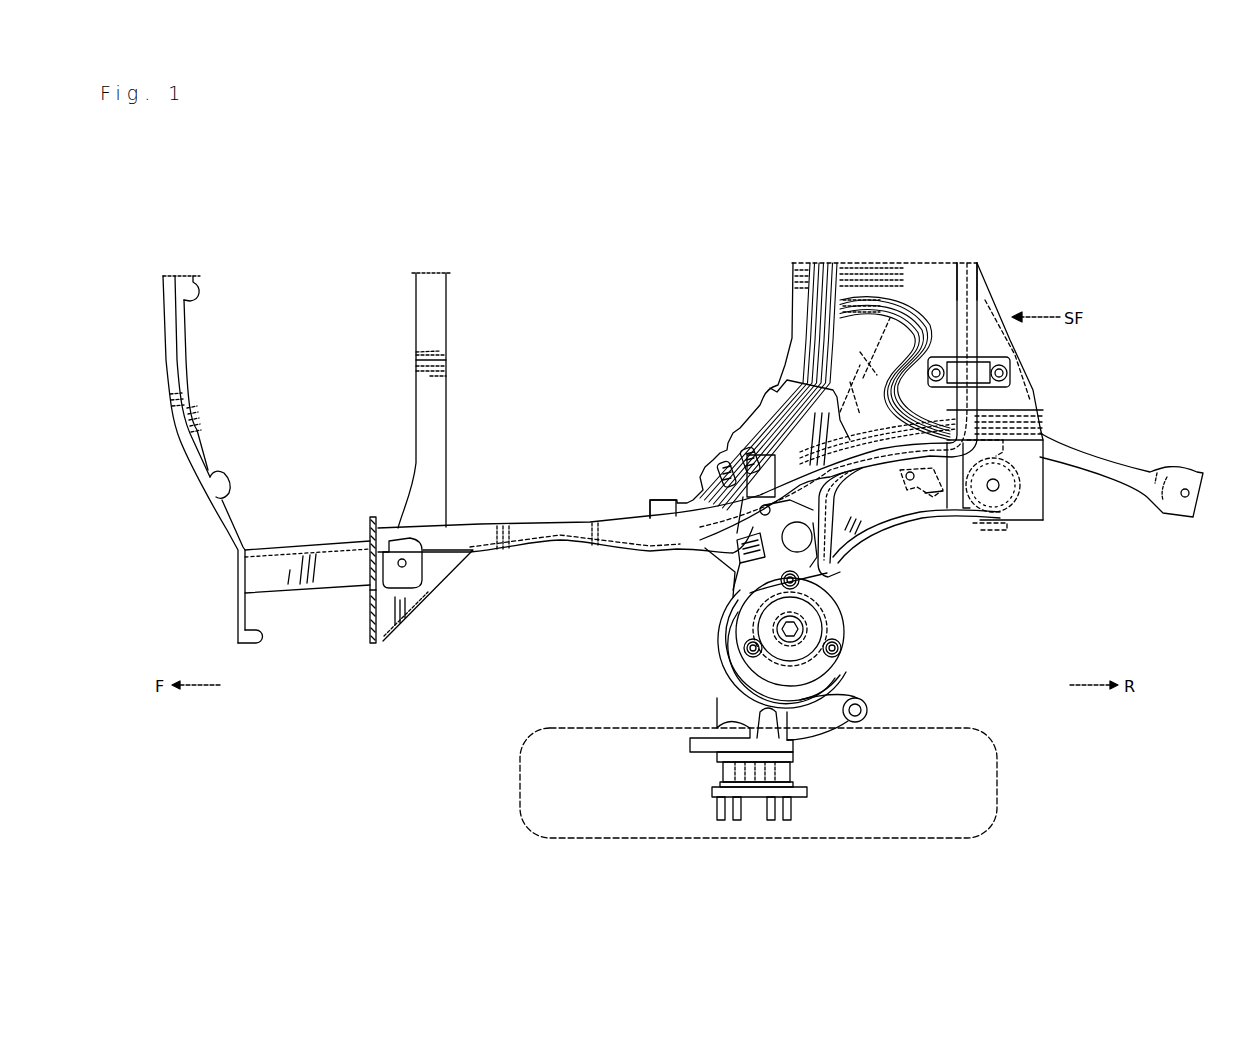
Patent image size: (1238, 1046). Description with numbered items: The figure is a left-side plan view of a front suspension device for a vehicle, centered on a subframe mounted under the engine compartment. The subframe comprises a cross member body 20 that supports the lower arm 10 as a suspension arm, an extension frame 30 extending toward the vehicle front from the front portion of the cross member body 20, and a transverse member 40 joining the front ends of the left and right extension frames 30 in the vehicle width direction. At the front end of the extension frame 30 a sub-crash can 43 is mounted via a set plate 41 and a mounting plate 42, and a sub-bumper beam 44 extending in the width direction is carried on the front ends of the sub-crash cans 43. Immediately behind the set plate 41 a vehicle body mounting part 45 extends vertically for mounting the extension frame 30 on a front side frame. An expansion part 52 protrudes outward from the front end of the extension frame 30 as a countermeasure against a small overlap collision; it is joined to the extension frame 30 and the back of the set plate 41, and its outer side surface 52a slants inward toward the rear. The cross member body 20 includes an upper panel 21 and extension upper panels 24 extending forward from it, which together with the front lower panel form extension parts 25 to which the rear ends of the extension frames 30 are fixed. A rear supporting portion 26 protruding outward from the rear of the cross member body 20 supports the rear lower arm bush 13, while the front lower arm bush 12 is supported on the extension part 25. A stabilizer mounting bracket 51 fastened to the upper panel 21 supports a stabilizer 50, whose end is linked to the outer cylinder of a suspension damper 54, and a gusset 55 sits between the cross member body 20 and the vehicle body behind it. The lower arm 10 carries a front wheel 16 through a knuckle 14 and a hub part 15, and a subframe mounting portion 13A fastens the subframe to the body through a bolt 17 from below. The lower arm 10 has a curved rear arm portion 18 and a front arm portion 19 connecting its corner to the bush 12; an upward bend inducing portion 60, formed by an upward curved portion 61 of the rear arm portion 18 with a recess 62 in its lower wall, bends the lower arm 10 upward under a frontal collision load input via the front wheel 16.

The lower arm 10 is at (853, 547).
The lower arm bush 12 is at (750, 460).
The lower arm bush 13 is at (1036, 511).
The subframe mounting portion 13A is at (1013, 500).
The knuckle 14 is at (813, 737).
The hub part 15 is at (790, 767).
The front wheel 16 is at (520, 803).
The bolt 17 is at (992, 492).
The rear arm portion 18 is at (837, 563).
The front arm portion 19 is at (733, 550).
The cross member body 20 is at (987, 303).
The upper panel 21 is at (910, 277).
The extension upper panel 24 is at (820, 372).
The extension part 25 is at (693, 480).
The rear supporting portion 26 is at (1040, 480).
The extension frame 30 is at (523, 521).
The transverse member 40 is at (413, 368).
The set plate 41 is at (370, 627).
The mounting plate 42 is at (370, 557).
The sub-crash can 43 is at (273, 543).
The sub-bumper beam 44 is at (166, 368).
The vehicle body mounting part 45 is at (397, 540).
The stabilizer 50 is at (978, 273).
The stabilizer mounting bracket 51 is at (1007, 357).
The expansion part 52 is at (427, 590).
The side surface 52a is at (413, 620).
The suspension damper 54 is at (712, 640).
The gusset 55 is at (1103, 458).
The upward bend inducing portion 60 is at (910, 512).
The upward curved portion 61 is at (906, 494).
The recess 62 is at (925, 495).